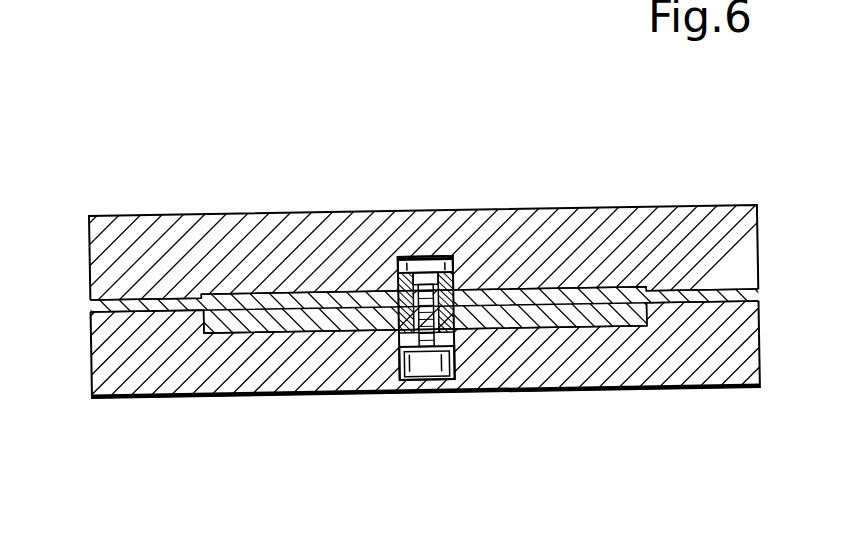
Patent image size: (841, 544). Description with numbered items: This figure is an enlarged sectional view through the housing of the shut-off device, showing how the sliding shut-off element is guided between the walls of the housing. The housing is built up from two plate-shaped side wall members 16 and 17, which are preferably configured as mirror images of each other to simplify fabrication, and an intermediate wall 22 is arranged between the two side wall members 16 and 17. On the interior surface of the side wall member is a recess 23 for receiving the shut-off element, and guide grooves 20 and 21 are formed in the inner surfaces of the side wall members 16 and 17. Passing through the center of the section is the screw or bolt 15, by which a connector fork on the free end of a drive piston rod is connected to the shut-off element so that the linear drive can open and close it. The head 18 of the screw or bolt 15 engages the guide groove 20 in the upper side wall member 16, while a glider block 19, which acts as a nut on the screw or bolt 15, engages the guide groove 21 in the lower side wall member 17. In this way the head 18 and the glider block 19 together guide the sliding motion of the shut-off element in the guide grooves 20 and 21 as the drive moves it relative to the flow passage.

The screw or bolt 15 is at (432, 252).
The side wall member 16 is at (180, 258).
The side wall member 17 is at (167, 372).
The head 18 is at (439, 392).
The glider block 19 is at (455, 262).
The guide groove 20 is at (400, 257).
The guide groove 21 is at (414, 383).
The intermediate wall 22 is at (593, 282).
The recess 23 is at (617, 328).